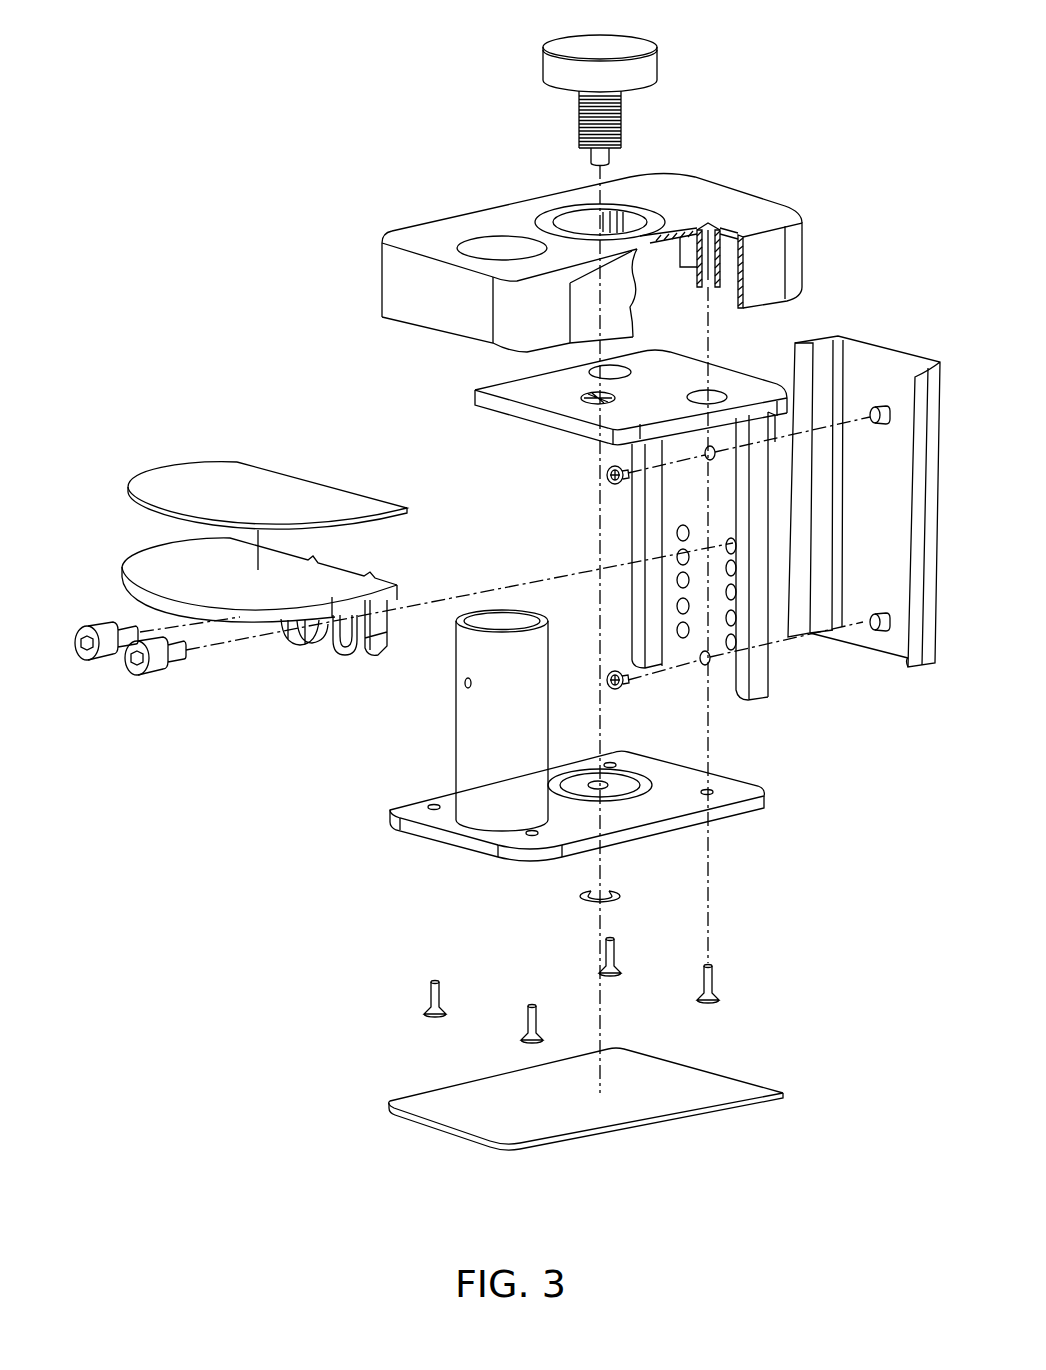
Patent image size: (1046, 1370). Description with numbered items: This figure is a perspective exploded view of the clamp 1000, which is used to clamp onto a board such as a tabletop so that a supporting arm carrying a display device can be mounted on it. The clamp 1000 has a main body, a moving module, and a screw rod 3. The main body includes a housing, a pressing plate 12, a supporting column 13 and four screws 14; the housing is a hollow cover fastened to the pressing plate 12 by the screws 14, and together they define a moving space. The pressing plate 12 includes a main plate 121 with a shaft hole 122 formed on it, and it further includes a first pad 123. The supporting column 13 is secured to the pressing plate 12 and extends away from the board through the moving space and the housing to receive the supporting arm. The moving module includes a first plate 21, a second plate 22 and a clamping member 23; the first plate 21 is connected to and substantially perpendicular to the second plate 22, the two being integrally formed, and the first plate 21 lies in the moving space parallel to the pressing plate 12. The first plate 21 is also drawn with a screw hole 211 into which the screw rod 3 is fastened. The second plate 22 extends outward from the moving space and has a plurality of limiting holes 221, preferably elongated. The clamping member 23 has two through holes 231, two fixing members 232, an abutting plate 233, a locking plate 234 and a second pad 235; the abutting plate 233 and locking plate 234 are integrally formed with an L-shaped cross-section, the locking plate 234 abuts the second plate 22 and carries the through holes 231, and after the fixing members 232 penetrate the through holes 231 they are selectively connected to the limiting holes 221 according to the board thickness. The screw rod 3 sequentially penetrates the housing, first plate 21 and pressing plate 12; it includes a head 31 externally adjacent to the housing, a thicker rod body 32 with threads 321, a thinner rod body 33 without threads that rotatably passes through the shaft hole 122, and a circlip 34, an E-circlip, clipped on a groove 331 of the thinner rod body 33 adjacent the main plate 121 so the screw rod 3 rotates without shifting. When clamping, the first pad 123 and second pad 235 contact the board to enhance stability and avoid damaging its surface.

The clamp 1000 is at (212, 58).
The screw rod 3 is at (655, 38).
The head 31 is at (646, 70).
The thicker rod body 32 is at (622, 115).
The threads 321 is at (578, 125).
The thinner rod body 33 is at (612, 152).
The groove 331 is at (591, 163).
The first plate 21 is at (735, 385).
The threaded hole 211 is at (588, 406).
The second plate 22 is at (722, 672).
The limiting holes 221 is at (677, 532).
The clamping member 23 is at (190, 440).
The through holes 231 is at (297, 650).
The fixing members 232 is at (92, 660).
The abutting plate 233 is at (127, 572).
The locking plate 234 is at (378, 653).
The second pad 235 is at (140, 494).
The supporting column 13 is at (475, 766).
The pressing plate 12 is at (412, 826).
The main plate 121 is at (738, 797).
The shaft hole 122 is at (605, 783).
The circlip 34 is at (578, 897).
The screws 14 is at (428, 996).
The first pad 123 is at (722, 1087).